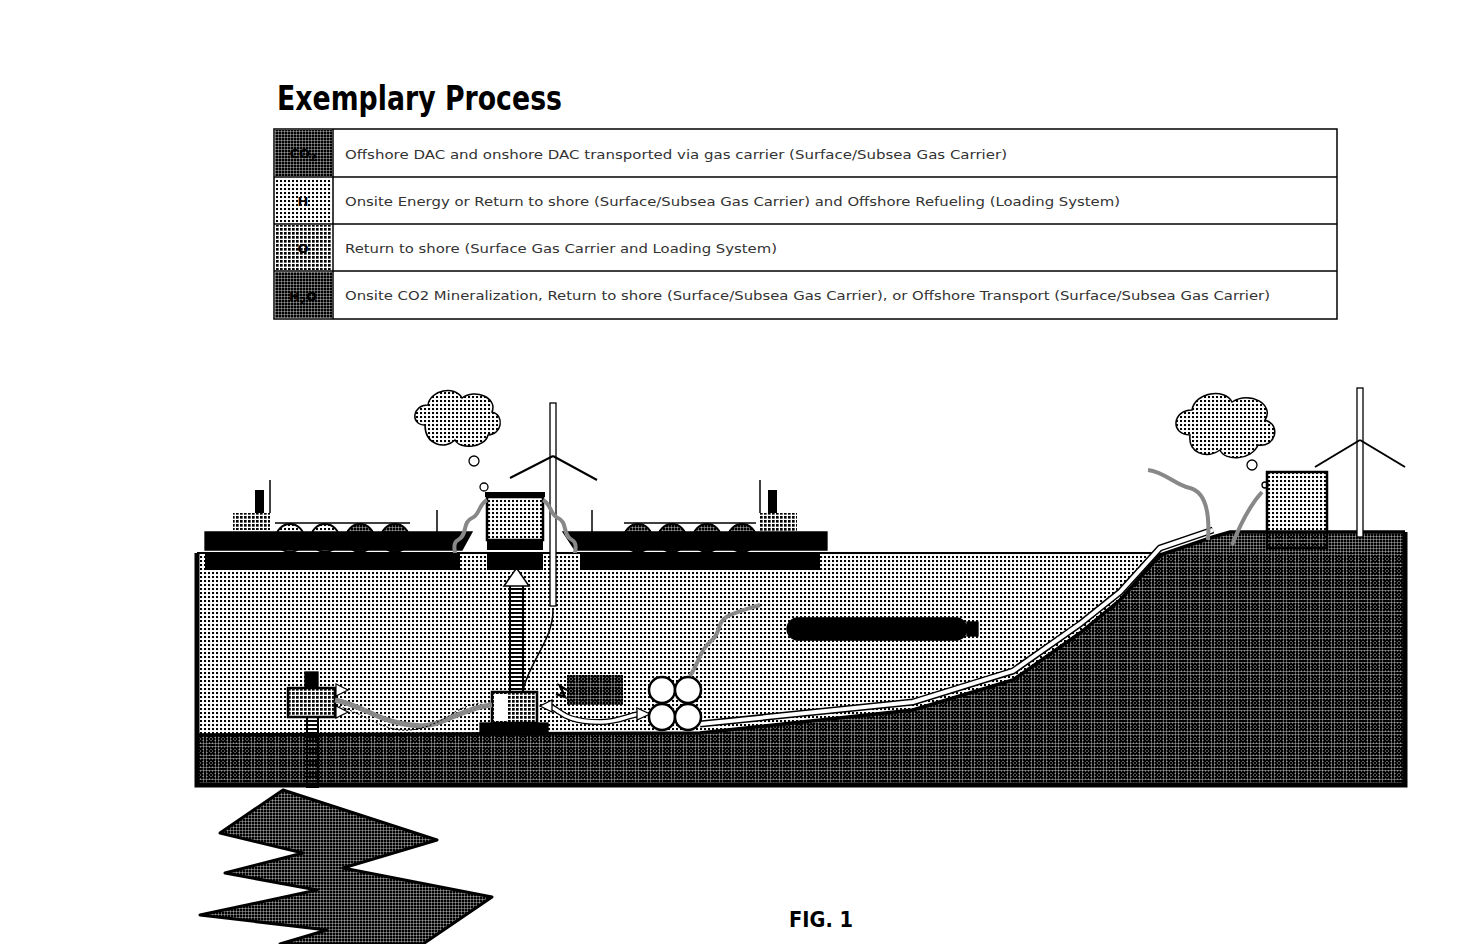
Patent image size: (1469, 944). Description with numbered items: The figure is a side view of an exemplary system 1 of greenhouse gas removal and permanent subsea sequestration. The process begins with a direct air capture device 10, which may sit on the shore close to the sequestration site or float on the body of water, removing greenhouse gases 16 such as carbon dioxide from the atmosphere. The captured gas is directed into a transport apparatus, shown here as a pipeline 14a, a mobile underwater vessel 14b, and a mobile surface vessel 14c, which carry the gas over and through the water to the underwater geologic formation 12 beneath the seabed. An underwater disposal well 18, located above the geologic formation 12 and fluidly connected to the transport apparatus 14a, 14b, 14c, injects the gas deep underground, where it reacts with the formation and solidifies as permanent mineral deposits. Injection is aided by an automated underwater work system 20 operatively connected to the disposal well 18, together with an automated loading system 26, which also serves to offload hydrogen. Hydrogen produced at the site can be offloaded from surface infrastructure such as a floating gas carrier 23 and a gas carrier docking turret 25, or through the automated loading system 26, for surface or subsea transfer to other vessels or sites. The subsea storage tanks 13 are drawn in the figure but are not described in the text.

The system of greenhouse gas removal and subsea sequestration 1 is at (236, 164).
The direct air capture device 10 is at (517, 515).
The underwater geologic formation 12 is at (427, 905).
The subsea storage tanks 13 is at (688, 718).
The pipeline 14a is at (305, 760).
The mobile underwater vessel 14b is at (937, 652).
The mobile surface vessel 14c is at (818, 522).
The greenhouse gases 16 is at (462, 412).
The underwater disposal well 18 is at (305, 704).
The automated underwater work system 20 is at (534, 744).
The floating gas carrier 23 is at (366, 578).
The gas carrier docking turret 25 is at (486, 585).
The automated loading system 26 is at (445, 484).